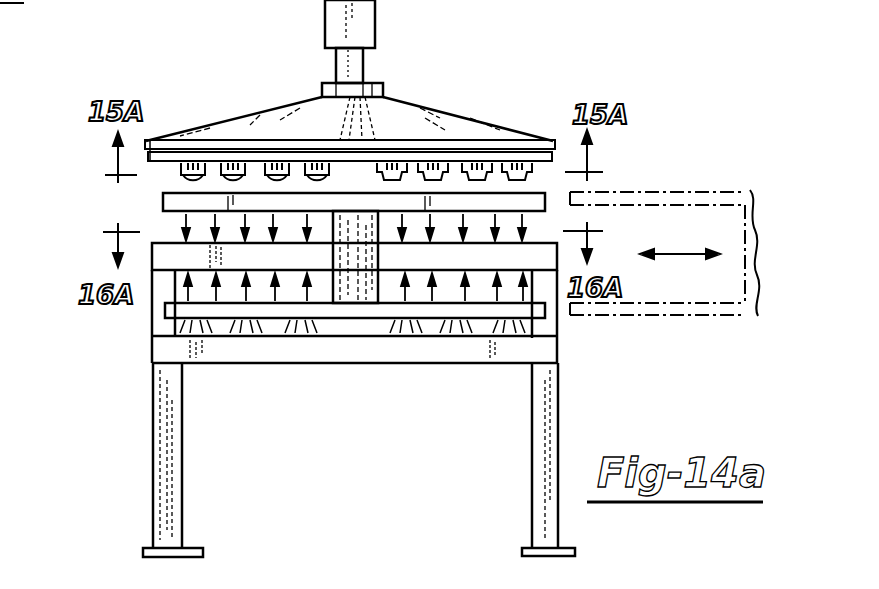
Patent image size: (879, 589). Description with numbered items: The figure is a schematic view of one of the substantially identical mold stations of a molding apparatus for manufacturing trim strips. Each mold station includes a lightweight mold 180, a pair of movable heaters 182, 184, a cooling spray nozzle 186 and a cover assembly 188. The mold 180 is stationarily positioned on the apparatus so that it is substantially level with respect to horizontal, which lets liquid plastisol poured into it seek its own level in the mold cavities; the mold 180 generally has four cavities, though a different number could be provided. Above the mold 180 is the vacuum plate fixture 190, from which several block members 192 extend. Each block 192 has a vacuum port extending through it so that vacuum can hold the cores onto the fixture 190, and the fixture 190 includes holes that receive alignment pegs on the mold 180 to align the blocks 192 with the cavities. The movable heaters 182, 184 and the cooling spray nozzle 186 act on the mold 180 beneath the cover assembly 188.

The mold 180 is at (182, 253).
The movable heater 182 is at (547, 203).
The movable heater 184 is at (540, 312).
The cooling spray nozzle 186 is at (463, 340).
The cover assembly 188 is at (493, 58).
The vacuum plate fixture 190 is at (147, 143).
The block member 192 is at (175, 172).